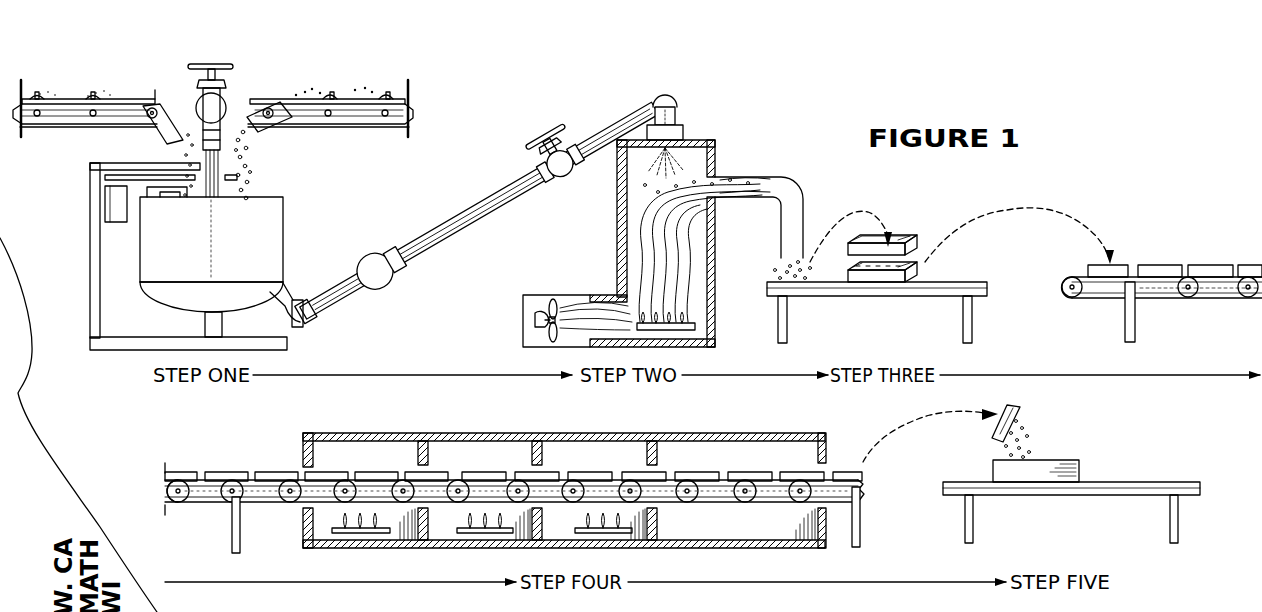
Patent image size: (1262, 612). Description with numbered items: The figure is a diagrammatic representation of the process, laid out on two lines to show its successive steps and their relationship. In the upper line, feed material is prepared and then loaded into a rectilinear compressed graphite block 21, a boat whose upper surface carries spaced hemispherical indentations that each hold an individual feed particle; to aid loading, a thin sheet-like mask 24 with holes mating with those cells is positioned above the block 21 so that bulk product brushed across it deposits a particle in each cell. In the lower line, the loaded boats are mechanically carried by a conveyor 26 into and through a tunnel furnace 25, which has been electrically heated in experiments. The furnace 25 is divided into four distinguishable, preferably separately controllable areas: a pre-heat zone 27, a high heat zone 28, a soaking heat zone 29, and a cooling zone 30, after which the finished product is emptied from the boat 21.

The compressed graphite block 21 is at (922, 268).
The sheet-like mask 24 is at (903, 248).
The tunnel furnace 25 is at (408, 433).
The conveyor 26 is at (266, 497).
The pre-heat zone 27 is at (356, 456).
The high heat zone 28 is at (477, 456).
The soaking heat zone 29 is at (570, 456).
The cooling zone 30 is at (718, 452).